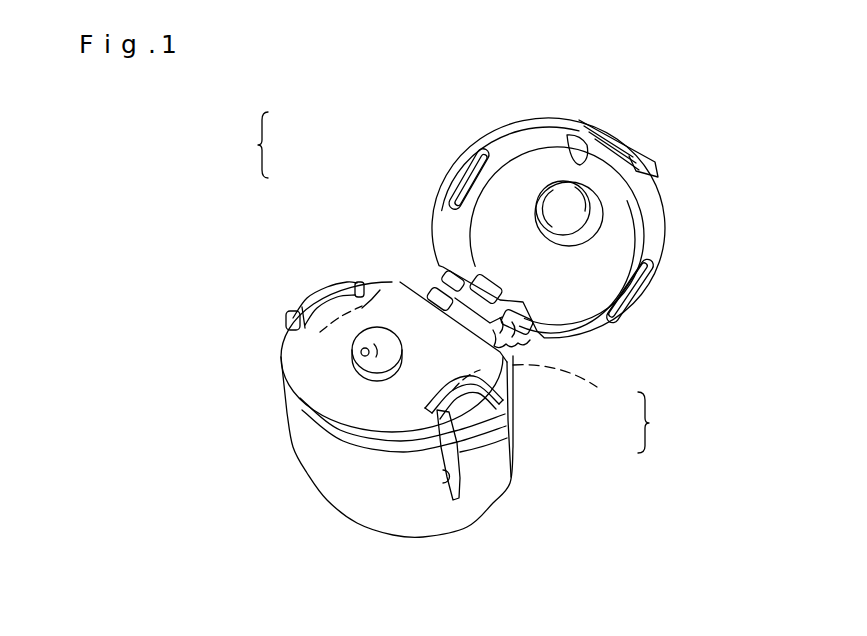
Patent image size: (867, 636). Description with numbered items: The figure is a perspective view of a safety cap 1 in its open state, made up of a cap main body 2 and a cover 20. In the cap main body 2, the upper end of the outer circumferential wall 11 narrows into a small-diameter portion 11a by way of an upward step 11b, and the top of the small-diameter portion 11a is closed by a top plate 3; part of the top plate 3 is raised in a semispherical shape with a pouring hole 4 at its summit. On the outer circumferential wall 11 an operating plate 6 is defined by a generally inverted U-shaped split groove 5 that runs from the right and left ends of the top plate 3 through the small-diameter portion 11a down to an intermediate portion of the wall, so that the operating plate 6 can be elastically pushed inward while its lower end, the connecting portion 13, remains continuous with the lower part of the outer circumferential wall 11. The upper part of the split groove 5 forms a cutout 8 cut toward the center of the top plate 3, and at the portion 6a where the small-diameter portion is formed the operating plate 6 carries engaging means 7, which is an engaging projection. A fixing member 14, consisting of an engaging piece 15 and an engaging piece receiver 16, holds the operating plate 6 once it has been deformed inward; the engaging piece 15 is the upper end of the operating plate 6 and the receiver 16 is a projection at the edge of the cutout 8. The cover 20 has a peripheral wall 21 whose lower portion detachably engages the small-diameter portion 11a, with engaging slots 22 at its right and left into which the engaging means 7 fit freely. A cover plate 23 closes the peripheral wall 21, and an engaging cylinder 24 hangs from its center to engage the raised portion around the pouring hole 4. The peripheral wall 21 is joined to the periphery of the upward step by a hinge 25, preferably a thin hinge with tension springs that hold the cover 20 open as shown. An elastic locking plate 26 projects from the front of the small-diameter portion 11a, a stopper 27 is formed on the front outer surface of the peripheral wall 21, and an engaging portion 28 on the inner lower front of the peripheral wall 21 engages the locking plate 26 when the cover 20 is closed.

The safety cap 1 is at (255, 145).
The cap main body 2 is at (341, 252).
The top plate 3 is at (395, 292).
The pouring hole 4 is at (361, 352).
The split groove 5 is at (360, 281).
The operating plate 6 is at (333, 285).
The portion of operating plate 6a is at (433, 417).
The engaging means 7 is at (317, 290).
The cutout 8 is at (367, 288).
The outer circumferential wall 11 is at (346, 478).
The small-diameter portion 11a is at (383, 448).
The upward step 11b is at (282, 370).
The connecting portion 13 is at (483, 494).
The fixing member 14 is at (662, 422).
The engaging piece 15 is at (308, 337).
The engaging piece receiver 16 is at (574, 383).
The cover 20 is at (428, 192).
The peripheral wall 21 is at (666, 240).
The engaging slots 22 is at (462, 158).
The cover plate 23 is at (532, 167).
The engaging cylinder 24 is at (584, 230).
The hinge 25 is at (426, 273).
The elastic locking plate 26 is at (370, 432).
The stopper 27 is at (615, 140).
The engaging portion 28 is at (568, 162).